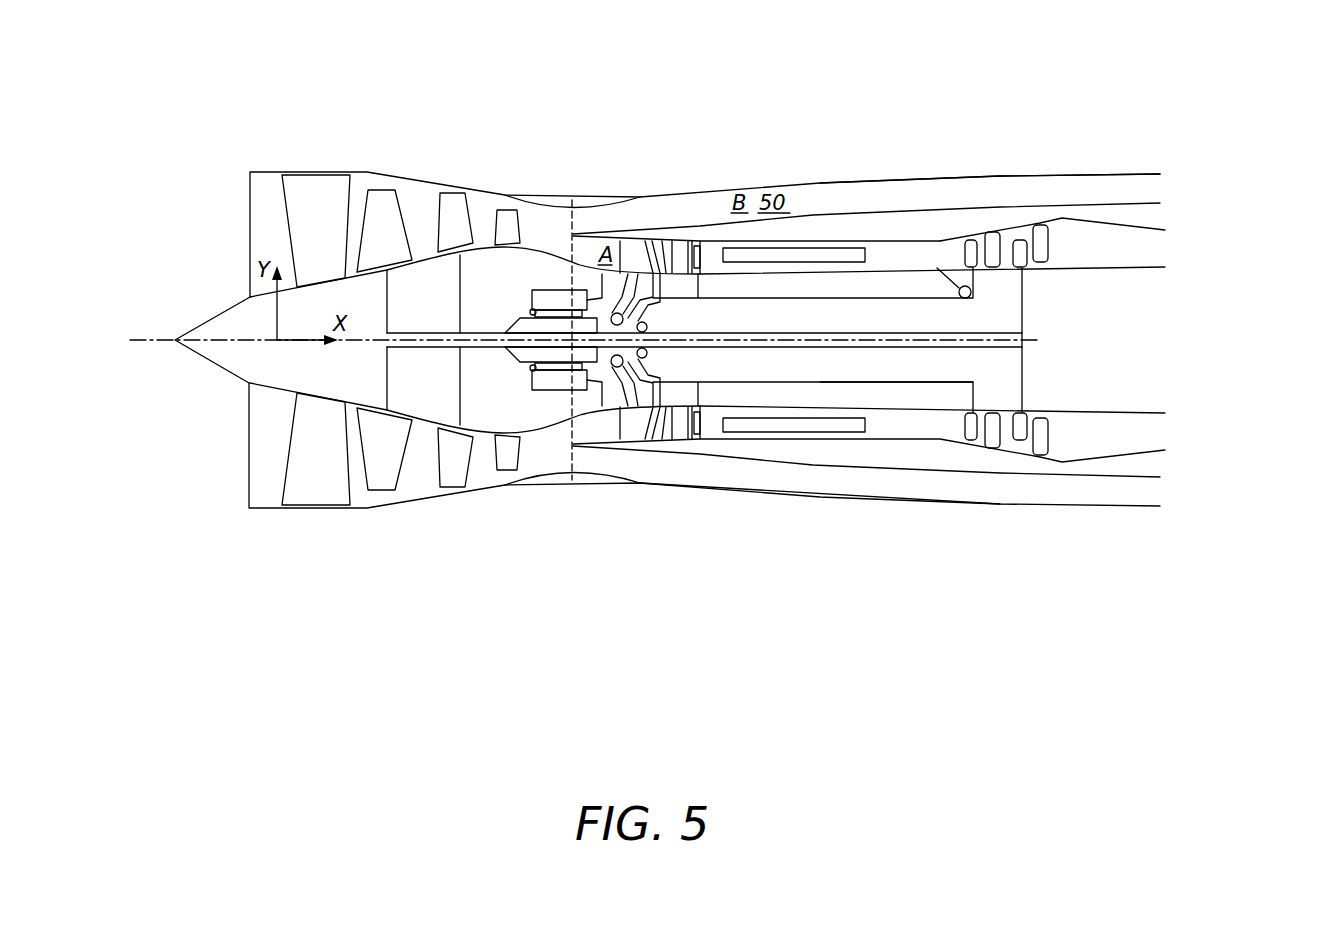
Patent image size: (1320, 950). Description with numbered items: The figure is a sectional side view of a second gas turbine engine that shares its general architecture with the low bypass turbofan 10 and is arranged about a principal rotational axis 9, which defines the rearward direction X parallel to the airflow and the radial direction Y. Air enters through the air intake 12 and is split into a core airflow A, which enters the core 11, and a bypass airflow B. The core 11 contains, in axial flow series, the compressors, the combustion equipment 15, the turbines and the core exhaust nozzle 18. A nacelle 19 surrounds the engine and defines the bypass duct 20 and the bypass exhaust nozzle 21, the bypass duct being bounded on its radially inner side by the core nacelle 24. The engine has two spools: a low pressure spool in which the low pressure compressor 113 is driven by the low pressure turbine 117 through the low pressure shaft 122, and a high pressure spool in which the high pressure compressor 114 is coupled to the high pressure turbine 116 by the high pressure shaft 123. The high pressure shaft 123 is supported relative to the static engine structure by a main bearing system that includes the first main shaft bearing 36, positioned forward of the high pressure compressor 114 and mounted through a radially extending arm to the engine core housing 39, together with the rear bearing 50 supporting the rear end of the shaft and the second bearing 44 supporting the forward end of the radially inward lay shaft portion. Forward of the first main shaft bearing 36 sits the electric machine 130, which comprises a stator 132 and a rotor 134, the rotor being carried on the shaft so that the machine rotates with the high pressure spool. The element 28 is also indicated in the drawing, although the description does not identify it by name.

The principal rotational axis 9 is at (223, 340).
The low bypass turbofan 10 is at (737, 118).
The core 11 is at (688, 213).
The air intake 12 is at (250, 199).
The combustion equipment 15 is at (815, 248).
The core exhaust nozzle 18 is at (1150, 250).
The nacelle 19 is at (900, 178).
The bypass duct 20 is at (760, 474).
The bypass exhaust nozzle 21 is at (1143, 188).
The core nacelle 24 is at (982, 471).
The bearing support 28 is at (512, 369).
The first main shaft bearing 36 is at (650, 273).
The engine core housing 39 is at (592, 418).
The second bearing 44 is at (533, 312).
The rear bearing 50 is at (1040, 290).
The low pressure compressor 113 is at (473, 518).
The high pressure compressor 114 is at (654, 478).
The high pressure turbine 116 is at (970, 240).
The low pressure turbine 117 is at (1020, 240).
The low pressure shaft 122 is at (787, 340).
The high pressure shaft 123 is at (907, 384).
The electric machine 130 is at (534, 270).
The stator 132 is at (552, 288).
The rotor 134 is at (553, 392).